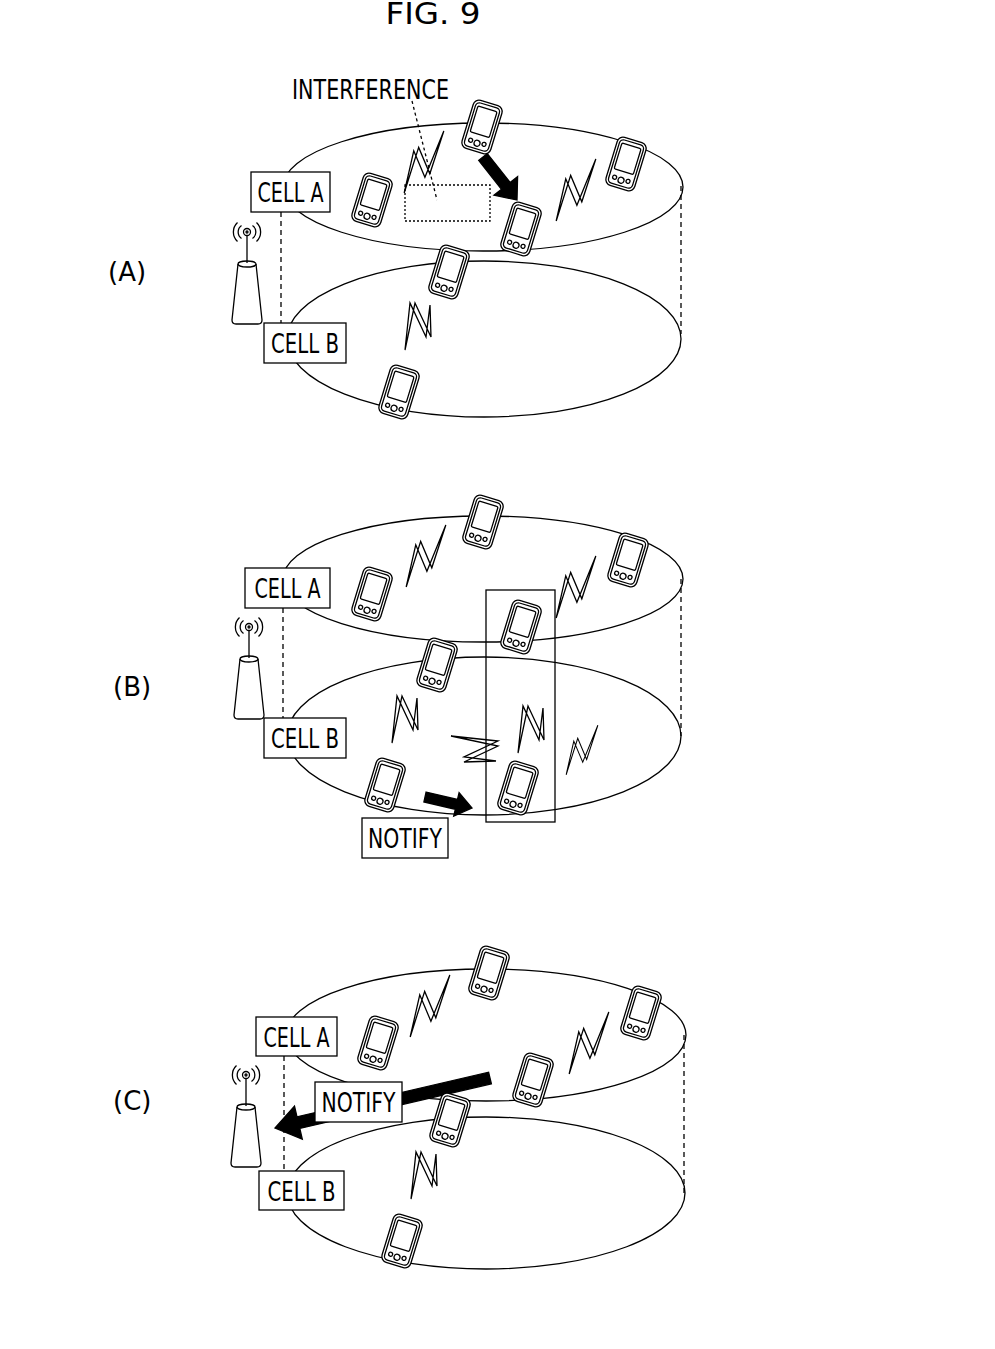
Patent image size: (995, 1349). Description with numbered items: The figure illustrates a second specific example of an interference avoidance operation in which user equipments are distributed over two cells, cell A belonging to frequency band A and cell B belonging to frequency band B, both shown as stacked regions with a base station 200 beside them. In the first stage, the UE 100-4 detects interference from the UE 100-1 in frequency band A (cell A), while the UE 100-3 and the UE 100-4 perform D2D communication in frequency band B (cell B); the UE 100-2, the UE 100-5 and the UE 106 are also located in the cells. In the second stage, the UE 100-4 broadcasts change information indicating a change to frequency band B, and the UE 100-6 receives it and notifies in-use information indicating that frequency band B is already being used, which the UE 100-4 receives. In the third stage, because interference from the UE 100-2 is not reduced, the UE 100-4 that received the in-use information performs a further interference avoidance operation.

The UE 100-1 is at (489, 103).
The UE 100-2 is at (367, 225).
The UE 100-3 is at (641, 141).
The UE 100-4 is at (548, 229).
The UE 100-5 is at (471, 274).
The UE 100-6 is at (370, 775).
The terminal device 106 is at (420, 389).
The base station 200 is at (235, 293).